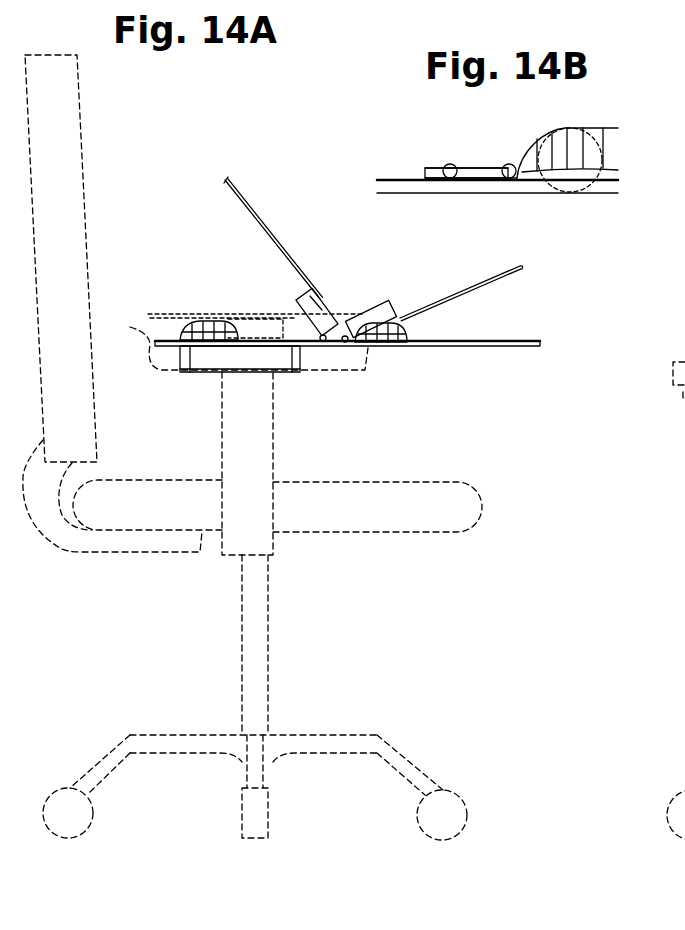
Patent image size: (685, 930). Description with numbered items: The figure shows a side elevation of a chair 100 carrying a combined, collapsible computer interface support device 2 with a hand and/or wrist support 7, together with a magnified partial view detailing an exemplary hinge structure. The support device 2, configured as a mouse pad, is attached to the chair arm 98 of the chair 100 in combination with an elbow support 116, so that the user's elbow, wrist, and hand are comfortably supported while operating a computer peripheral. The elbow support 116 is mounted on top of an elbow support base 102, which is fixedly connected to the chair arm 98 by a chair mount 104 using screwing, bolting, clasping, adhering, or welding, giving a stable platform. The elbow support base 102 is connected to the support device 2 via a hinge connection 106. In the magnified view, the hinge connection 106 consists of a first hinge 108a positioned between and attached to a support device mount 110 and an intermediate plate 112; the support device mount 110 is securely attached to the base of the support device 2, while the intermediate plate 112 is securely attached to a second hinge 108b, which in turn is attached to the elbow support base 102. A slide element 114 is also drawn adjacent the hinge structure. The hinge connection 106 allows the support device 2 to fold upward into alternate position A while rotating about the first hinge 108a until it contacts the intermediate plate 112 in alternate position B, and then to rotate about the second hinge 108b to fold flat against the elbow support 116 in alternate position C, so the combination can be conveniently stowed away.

In FIG. 14A, the computer interface support device 2 is at (462, 380).
In FIG. 14A, the hand and/or wrist support 7 is at (434, 328).
In FIG. 14B, the hand and/or wrist support 7 is at (600, 108).
In FIG. 14A, the chair arm 98 is at (372, 355).
In FIG. 14A, the chair 100 is at (80, 170).
In FIG. 14A, the elbow support base 102 is at (153, 340).
In FIG. 14B, the elbow support base 102 is at (377, 183).
In FIG. 14A, the chair mount 104 is at (300, 362).
In FIG. 14A, the hinge connection 106 is at (349, 286).
In FIG. 14B, the hinge connection 106 is at (480, 130).
In FIG. 14B, the first hinge 108a is at (512, 178).
In FIG. 14B, the second hinge 108b is at (453, 180).
In FIG. 14B, the support device mount 110 is at (549, 192).
In FIG. 14B, the intermediate plate 112 is at (470, 167).
In FIG. 14B, the slide strip 114 is at (428, 168).
In FIG. 14A, the elbow support 116 is at (206, 296).
In FIG. 14A, the alternate position A is at (516, 268).
In FIG. 14A, the alternate position B is at (252, 208).
In FIG. 14A, the alternate position C is at (163, 312).